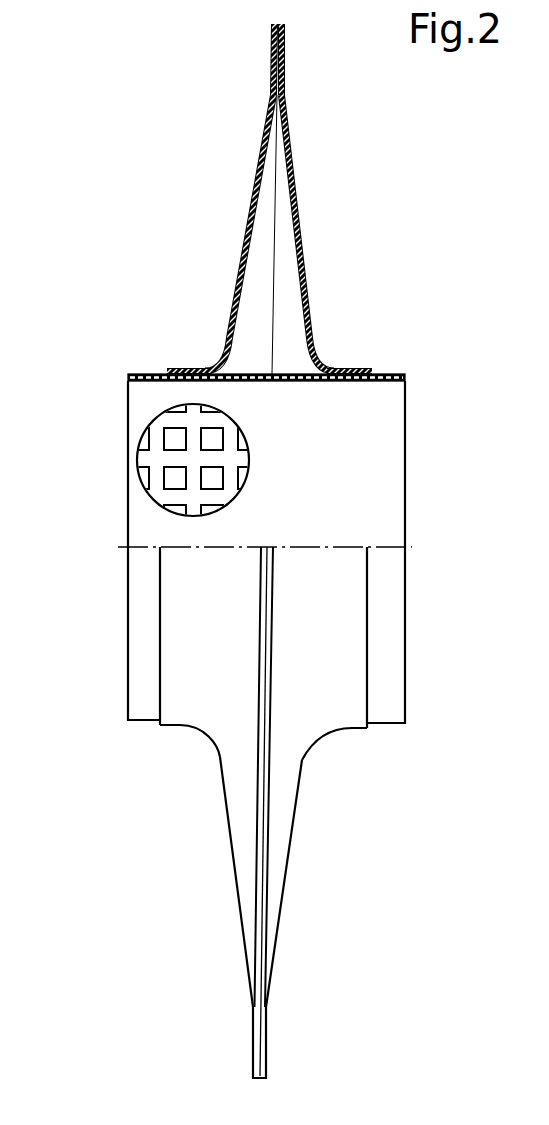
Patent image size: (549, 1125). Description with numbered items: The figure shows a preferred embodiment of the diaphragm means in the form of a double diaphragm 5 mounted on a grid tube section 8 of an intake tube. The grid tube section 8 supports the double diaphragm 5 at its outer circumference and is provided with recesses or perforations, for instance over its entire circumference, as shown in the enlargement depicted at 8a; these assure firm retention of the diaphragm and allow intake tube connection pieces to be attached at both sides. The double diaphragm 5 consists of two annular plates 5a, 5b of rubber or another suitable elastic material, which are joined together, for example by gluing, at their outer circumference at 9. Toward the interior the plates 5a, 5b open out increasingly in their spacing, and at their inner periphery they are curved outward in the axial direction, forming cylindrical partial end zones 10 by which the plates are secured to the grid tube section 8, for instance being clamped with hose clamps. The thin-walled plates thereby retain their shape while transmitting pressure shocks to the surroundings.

The double diaphragm 5 is at (286, 194).
The annular plate 5a is at (247, 213).
The annular plate 5b is at (302, 223).
The grid tube section 8 is at (150, 379).
The enlargement of perforations 8a is at (145, 488).
The outer circumference joint 9 is at (287, 47).
The cylindrical partial end zone 10 is at (187, 362).